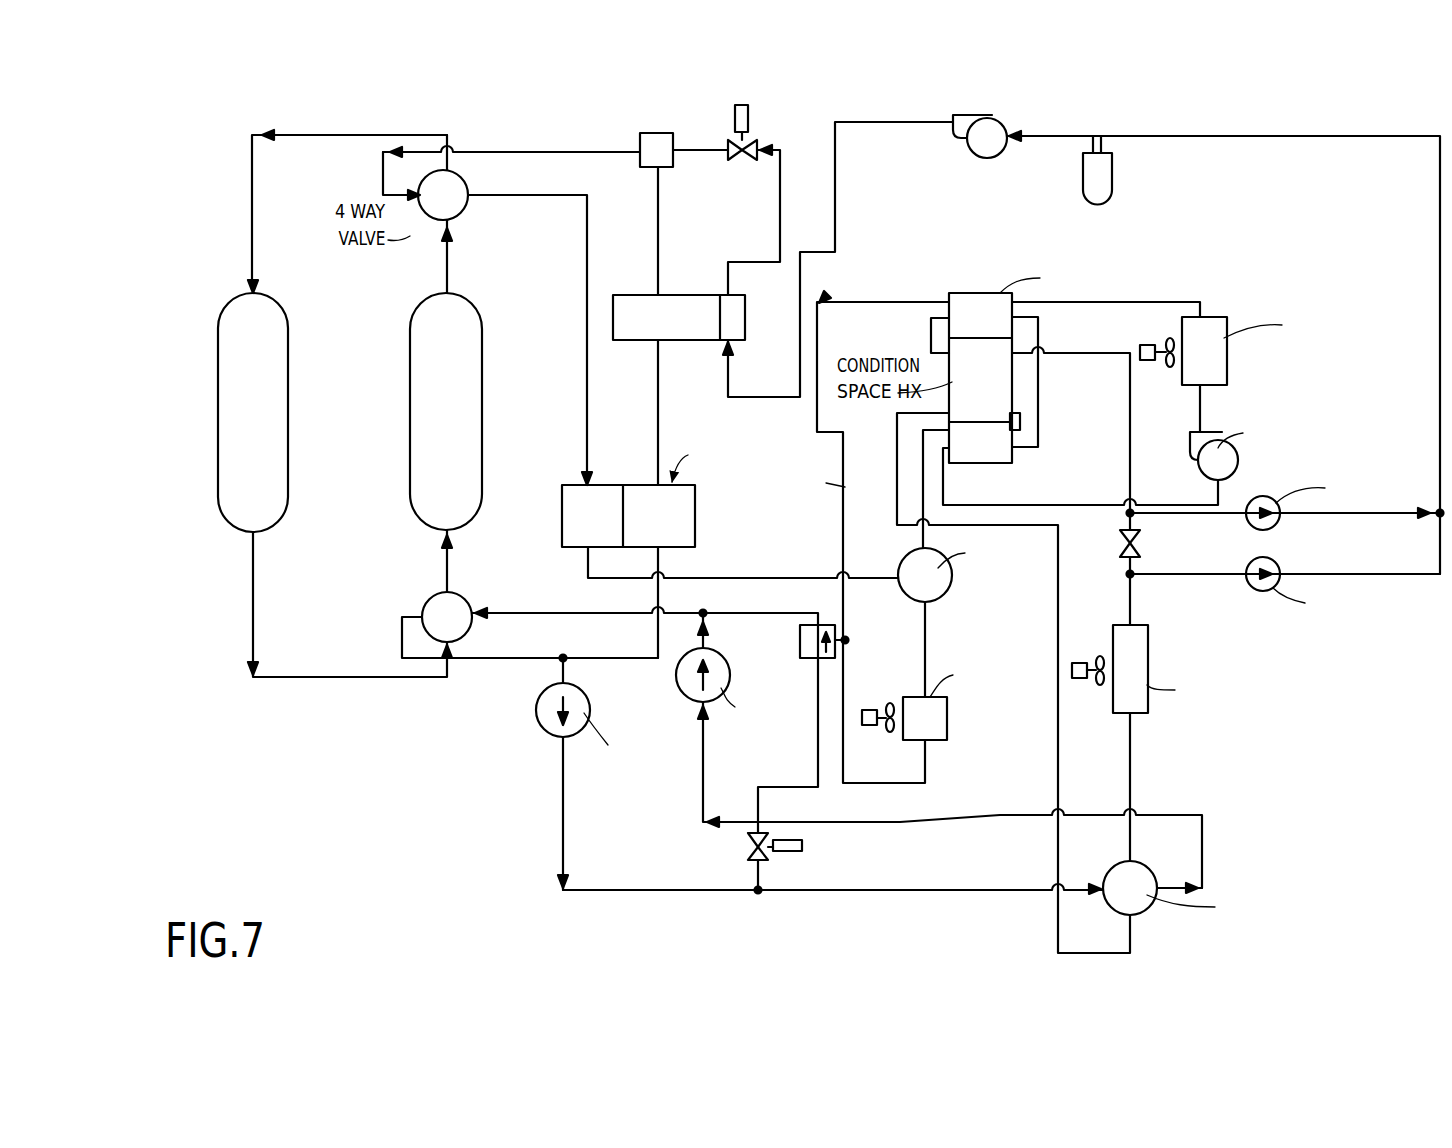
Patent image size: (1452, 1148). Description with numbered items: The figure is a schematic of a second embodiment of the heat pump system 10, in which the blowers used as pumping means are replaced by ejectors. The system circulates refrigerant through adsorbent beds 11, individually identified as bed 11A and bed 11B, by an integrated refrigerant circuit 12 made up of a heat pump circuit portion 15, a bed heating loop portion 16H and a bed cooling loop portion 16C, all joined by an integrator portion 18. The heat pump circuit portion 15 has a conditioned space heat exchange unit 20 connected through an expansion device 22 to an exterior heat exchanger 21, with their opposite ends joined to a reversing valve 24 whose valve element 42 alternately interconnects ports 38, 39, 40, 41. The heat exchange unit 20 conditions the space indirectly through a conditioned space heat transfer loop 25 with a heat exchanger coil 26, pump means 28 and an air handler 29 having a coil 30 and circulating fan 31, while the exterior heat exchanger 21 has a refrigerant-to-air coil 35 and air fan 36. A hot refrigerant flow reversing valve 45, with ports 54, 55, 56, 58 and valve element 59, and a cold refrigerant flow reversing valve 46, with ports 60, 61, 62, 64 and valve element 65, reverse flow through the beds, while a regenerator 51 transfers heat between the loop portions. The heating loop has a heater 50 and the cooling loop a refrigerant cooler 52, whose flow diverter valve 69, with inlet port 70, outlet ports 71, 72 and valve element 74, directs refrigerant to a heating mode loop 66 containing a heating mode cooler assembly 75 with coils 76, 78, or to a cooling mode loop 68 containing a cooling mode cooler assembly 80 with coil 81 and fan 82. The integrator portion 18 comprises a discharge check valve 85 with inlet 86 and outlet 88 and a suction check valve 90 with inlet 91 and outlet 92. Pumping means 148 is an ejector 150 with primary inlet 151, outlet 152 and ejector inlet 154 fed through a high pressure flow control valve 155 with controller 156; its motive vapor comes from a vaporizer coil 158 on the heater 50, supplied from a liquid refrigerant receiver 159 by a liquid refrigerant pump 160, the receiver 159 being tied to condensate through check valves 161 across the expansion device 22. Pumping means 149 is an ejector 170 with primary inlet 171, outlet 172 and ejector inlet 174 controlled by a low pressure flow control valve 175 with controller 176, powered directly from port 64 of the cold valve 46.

The heat pump system 10 is at (308, 760).
The adsorbent beds 11 is at (397, 298).
The adsorbent bed 11A is at (272, 476).
The adsorbent bed 11B is at (409, 338).
The integrated refrigerant circuit 12 is at (763, 332).
The heat pump circuit portion 15 is at (1144, 612).
The bed cooling loop portion 16C is at (582, 268).
The bed heating loop portion 16H is at (684, 235).
The integrator portion 18 is at (555, 752).
The conditioned space heat exchange unit 20 is at (1032, 362).
The exterior heat exchanger 21 is at (1140, 643).
The expansion device 22 is at (1142, 545).
The reversing valve 24 is at (1104, 904).
The conditioned space heat transfer loop 25 is at (1204, 300).
The heat exchanger coil 26 is at (1005, 395).
The pump means 28 is at (1238, 463).
The conditioned space air handler 29 is at (1212, 318).
The air-to-fluid heat exchanger coil 30 is at (1222, 365).
The circulating fan 31 is at (1148, 345).
The refrigerant-to-air coil 35 is at (1130, 668).
The air fan 36 is at (1085, 663).
The port 38 is at (1106, 876).
The port 39 is at (1158, 878).
The port 40 is at (1133, 914).
The port 41 is at (1133, 860).
The valve element 42 is at (1118, 906).
The hot refrigerant flow reversing valve 45 is at (467, 170).
The cold refrigerant flow reversing valve 46 is at (430, 597).
The heater 50 is at (678, 295).
The regenerator 51 is at (623, 483).
The refrigerant cooler 52 is at (868, 550).
The port 54 is at (455, 213).
The port 55 is at (432, 178).
The port 56 is at (462, 192).
The port 58 is at (414, 193).
The valve element 59 is at (434, 214).
The port 60 is at (470, 596).
The port 61 is at (445, 665).
The port 62 is at (470, 628).
The port 64 is at (421, 602).
The valve element 65 is at (430, 620).
The heating mode loop 66 is at (826, 298).
The cooling mode loop 68 is at (840, 797).
The flow diverter valve 69 is at (900, 590).
The inlet port 70 is at (905, 574).
The first outlet port 71 is at (940, 545).
The second outlet port 72 is at (930, 598).
The valve element 74 is at (918, 600).
The heating mode cooler assembly 75 is at (957, 293).
The high temperature refrigerant-to-fluid heat exchanger coil 76 is at (1000, 440).
The low temperature refrigerant-to-fluid heat exchanger coil 78 is at (975, 305).
The cooling mode cooler assembly 80 is at (952, 721).
The refrigerant-to-air heat exchanger coil 81 is at (948, 740).
The air circulation fan 82 is at (868, 726).
The discharge check valve 85 is at (540, 704).
The inlet 86 is at (545, 690).
The outlet 88 is at (565, 740).
The suction check valve 90 is at (678, 672).
The inlet 91 is at (701, 703).
The outlet 92 is at (704, 655).
The pumping means 148 is at (580, 95).
The pumping means 149 is at (801, 630).
The ejector 150 is at (657, 130).
The primary inlet 151 is at (657, 168).
The outlet 152 is at (638, 150).
The ejector inlet 154 is at (673, 152).
The high pressure flow control valve 155 is at (748, 160).
The controller 156 is at (748, 118).
The vaporizer coil 158 is at (735, 340).
The liquid refrigerant receiver 159 is at (1100, 183).
The liquid refrigerant pump 160 is at (986, 122).
The check valves 161 is at (1276, 563).
The ejector 170 is at (808, 645).
The primary inlet 171 is at (838, 665).
The outlet 172 is at (830, 625).
The ejector inlet 174 is at (840, 650).
The low pressure flow control valve 175 is at (748, 848).
The controller 176 is at (803, 846).